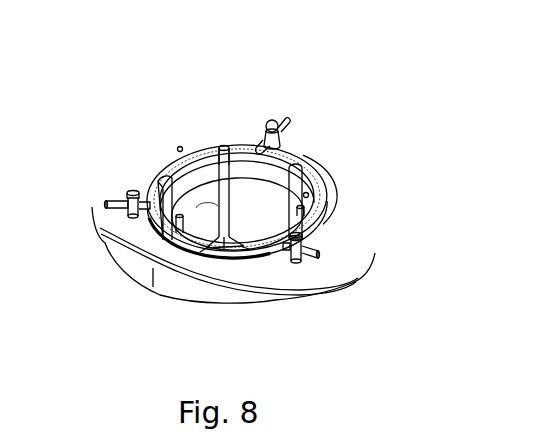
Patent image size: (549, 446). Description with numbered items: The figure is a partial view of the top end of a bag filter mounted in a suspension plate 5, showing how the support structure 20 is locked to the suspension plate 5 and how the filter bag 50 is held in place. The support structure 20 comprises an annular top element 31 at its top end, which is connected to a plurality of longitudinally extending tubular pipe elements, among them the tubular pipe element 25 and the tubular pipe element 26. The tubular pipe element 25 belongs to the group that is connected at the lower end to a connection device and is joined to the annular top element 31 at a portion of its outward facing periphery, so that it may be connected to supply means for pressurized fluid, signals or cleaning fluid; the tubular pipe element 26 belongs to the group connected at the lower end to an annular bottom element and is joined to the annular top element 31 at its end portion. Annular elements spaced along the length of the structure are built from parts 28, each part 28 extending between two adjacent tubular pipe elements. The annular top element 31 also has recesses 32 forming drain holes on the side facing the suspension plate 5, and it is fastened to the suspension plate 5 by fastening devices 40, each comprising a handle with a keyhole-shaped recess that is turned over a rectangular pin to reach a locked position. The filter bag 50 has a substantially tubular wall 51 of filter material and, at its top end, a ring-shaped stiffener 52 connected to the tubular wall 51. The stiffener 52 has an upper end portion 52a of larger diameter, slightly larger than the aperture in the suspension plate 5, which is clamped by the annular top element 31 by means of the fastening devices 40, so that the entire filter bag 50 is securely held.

The suspension plate 5 is at (345, 255).
The support structure 20 is at (288, 147).
The tubular pipe element 25 is at (209, 205).
The tubular pipe element 26 is at (168, 190).
The part 28 is at (237, 245).
The annular top element 31 is at (320, 210).
The recess 32 is at (283, 258).
The fastening device 40 is at (119, 190).
The filter bag 50 is at (183, 150).
The tubular wall 51 is at (262, 207).
The ring-shaped stiffener 52 is at (256, 172).
The upper end portion 52a is at (240, 155).